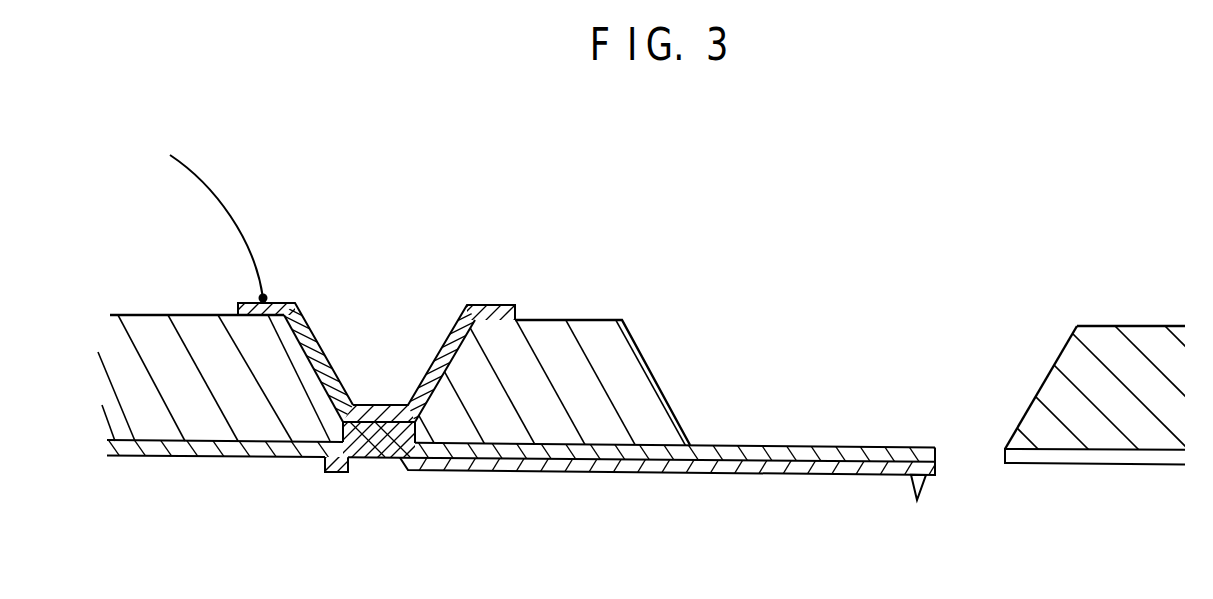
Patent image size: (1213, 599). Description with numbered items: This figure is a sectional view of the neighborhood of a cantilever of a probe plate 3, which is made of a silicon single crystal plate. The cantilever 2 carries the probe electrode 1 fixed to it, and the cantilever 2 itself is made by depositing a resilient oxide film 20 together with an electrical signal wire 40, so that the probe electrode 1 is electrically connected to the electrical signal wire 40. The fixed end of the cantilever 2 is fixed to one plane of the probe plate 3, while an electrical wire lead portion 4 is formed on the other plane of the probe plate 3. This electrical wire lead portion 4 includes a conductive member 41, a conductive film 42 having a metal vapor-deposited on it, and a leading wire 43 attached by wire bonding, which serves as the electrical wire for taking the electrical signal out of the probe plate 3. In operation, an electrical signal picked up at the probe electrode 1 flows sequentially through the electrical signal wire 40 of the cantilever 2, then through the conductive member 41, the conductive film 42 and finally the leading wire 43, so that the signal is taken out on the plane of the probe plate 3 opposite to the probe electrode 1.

The probe electrode 1 is at (919, 498).
The cantilever 2 is at (830, 477).
The probe plate 3 is at (636, 368).
The electrical wire lead portion 4 is at (372, 404).
The resilient oxide film 20 is at (783, 450).
The electrical signal wire 40 is at (513, 472).
The conductive member 41 is at (346, 434).
The conductive film 42 is at (303, 318).
The leading wire 43 is at (209, 182).